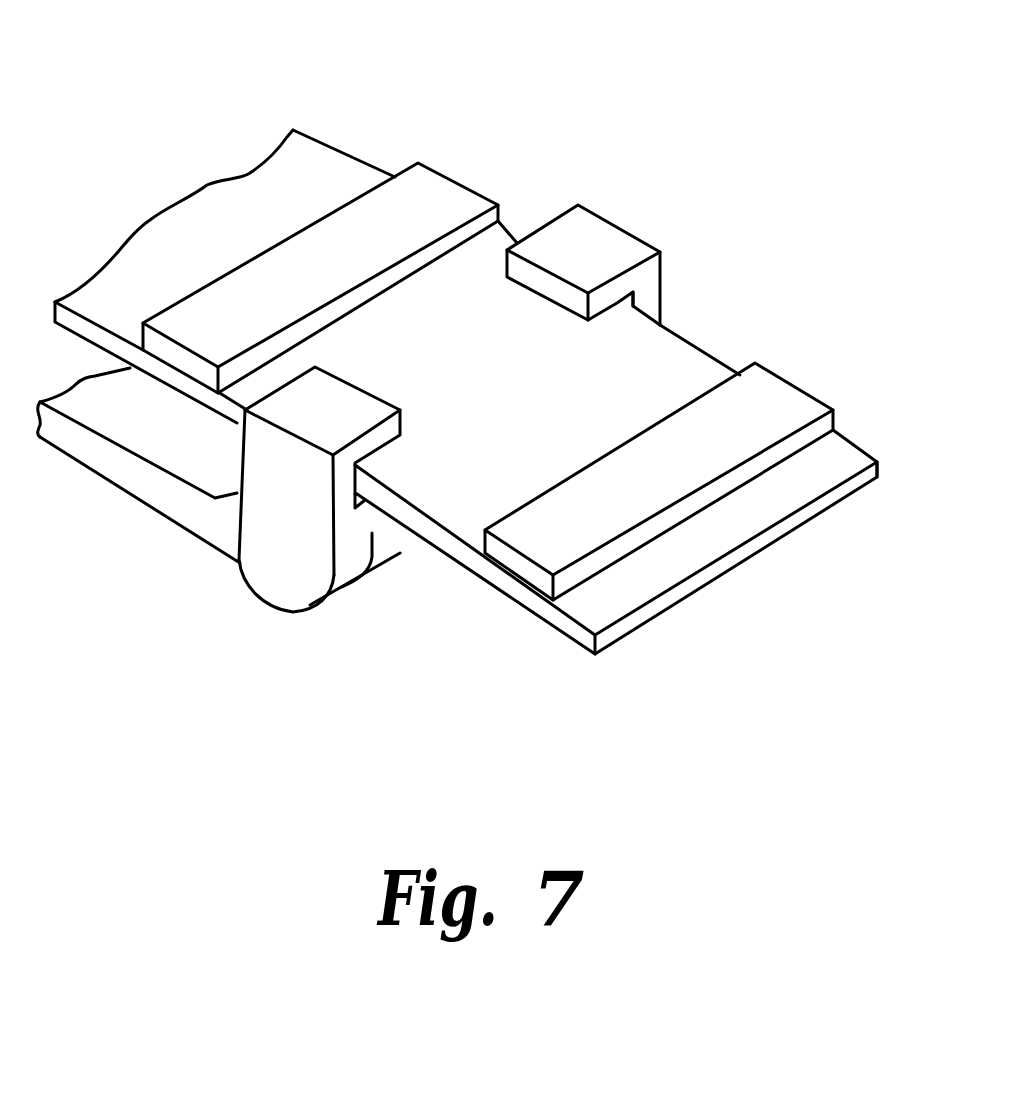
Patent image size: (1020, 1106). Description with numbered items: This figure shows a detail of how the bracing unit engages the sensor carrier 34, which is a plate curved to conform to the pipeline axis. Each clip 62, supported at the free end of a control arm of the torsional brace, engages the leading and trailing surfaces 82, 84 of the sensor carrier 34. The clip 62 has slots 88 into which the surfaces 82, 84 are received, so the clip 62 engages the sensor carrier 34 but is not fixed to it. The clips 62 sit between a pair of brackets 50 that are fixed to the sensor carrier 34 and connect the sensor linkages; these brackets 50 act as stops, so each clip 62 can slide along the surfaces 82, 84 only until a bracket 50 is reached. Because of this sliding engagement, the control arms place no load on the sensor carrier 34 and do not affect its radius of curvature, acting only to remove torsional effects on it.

The sensor carrier 34 is at (300, 165).
The brackets 50 is at (432, 198).
The clip 62 is at (300, 568).
The leading surface 82 is at (553, 615).
The trailing surface 84 is at (853, 455).
The slots 88 is at (366, 500).